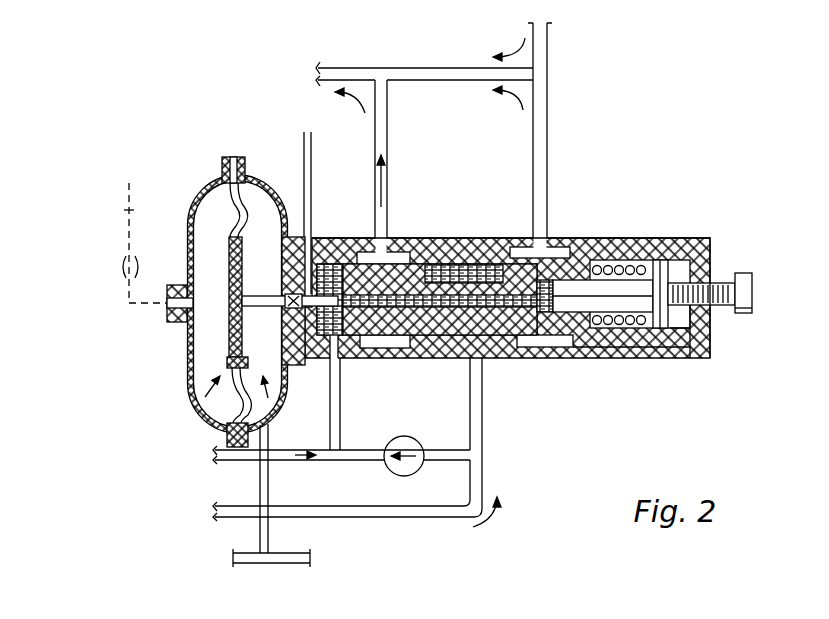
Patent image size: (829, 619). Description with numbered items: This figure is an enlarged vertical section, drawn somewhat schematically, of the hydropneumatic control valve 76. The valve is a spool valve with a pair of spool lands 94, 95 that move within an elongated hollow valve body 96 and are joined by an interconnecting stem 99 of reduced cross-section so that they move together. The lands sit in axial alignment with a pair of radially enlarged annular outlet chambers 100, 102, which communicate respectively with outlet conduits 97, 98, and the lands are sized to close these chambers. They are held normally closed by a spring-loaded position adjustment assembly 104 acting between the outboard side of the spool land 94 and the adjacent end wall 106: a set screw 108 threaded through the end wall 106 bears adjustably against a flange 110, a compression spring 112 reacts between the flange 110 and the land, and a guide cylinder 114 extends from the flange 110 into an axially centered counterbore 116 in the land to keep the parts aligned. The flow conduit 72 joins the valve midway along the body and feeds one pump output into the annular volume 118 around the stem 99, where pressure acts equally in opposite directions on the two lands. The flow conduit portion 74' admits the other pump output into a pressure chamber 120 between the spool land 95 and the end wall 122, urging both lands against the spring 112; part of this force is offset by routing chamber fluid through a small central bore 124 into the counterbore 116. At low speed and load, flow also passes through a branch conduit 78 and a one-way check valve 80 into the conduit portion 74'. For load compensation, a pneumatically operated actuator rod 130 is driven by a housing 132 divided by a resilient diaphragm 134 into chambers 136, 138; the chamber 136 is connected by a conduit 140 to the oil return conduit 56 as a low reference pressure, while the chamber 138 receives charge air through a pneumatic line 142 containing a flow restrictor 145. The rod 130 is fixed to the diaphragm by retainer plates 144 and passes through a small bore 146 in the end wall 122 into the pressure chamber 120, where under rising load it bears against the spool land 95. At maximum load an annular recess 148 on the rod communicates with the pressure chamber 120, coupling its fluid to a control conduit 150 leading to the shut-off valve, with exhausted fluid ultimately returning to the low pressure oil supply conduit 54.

The oil supply conduit 54 is at (440, 70).
The oil return conduit 56 is at (284, 567).
The flow conduit 72 is at (483, 430).
The flow conduit portion 74' is at (328, 427).
The control valve 76 is at (650, 183).
The branch conduit 78 is at (353, 462).
The one-way check valve 80 is at (420, 442).
The spool land 94 is at (588, 328).
The spool land 95 is at (393, 350).
The valve body 96 is at (688, 345).
The outlet conduit 97 is at (548, 140).
The outlet conduit 98 is at (387, 122).
The interconnecting stem 99 is at (443, 262).
The annular outlet chamber 100 is at (555, 245).
The annular outlet chamber 102 is at (405, 257).
The spring-loaded position adjustment assembly 104 is at (633, 338).
The end wall 106 is at (700, 320).
The set screw 108 is at (742, 277).
The flange 110 is at (668, 262).
The compression spring 112 is at (622, 262).
The guide cylinder 114 is at (572, 290).
The counterbore 116 is at (545, 312).
The annular volume 118 is at (487, 274).
The pressure chamber 120 is at (327, 268).
The end wall 122 is at (293, 358).
The central bore 124 is at (489, 338).
The actuator rod 130 is at (255, 298).
The housing 132 is at (197, 192).
The resilient diaphragm 134 is at (247, 200).
The chamber 136 is at (273, 412).
The chamber 138 is at (205, 397).
The conduit 140 is at (270, 481).
The pneumatic line 142 is at (130, 210).
The retainer plates 144 is at (243, 340).
The flow restrictor 145 is at (120, 266).
The small bore 146 is at (275, 306).
The annular recess 148 is at (282, 276).
The control conduit 150 is at (312, 180).